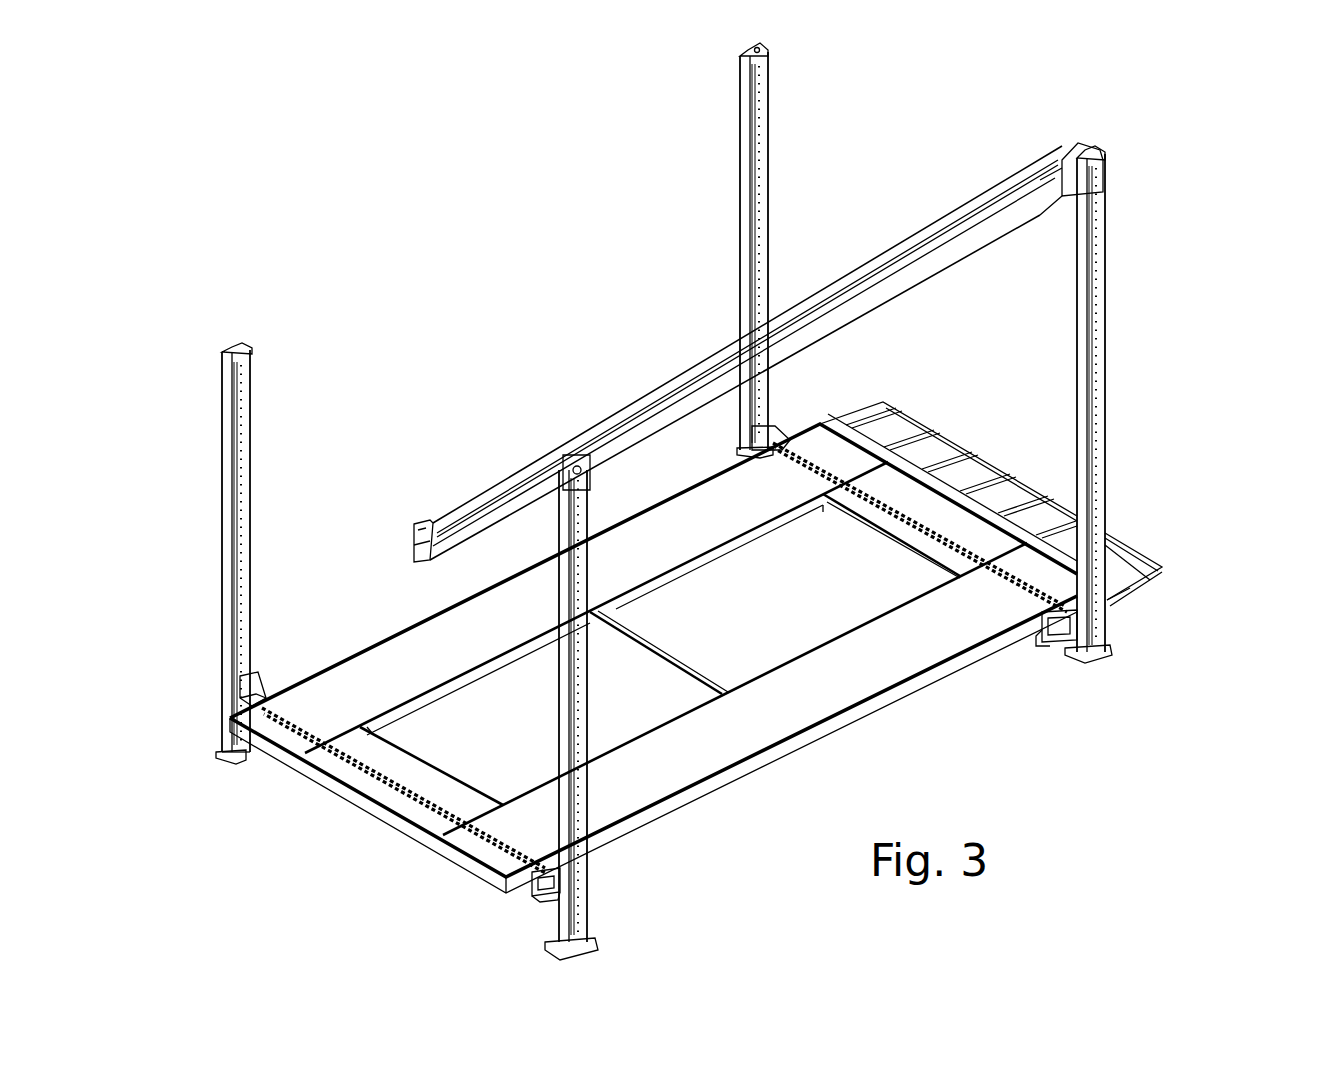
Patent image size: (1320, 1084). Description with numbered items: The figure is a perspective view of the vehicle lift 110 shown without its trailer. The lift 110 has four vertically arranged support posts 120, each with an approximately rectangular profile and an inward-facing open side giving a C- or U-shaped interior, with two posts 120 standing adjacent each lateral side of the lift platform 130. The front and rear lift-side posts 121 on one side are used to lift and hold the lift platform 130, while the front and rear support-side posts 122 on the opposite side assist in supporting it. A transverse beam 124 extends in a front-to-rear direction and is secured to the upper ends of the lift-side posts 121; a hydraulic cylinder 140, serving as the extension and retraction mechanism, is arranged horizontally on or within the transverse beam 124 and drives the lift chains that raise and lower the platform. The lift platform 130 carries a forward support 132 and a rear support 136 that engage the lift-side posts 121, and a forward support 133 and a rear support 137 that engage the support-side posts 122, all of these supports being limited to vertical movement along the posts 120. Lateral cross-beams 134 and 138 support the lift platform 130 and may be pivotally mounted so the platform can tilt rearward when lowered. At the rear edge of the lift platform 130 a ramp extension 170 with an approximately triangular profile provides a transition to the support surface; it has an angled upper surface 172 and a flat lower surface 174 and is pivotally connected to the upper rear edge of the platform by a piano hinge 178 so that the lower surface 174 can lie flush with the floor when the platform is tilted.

The vehicle lift 110 is at (1160, 262).
The support posts 120 is at (768, 213).
The lift-side posts 121 is at (1100, 373).
The support-side posts 122 is at (758, 131).
The transverse beam 124 is at (470, 530).
The lift platform 130 is at (860, 648).
The forward support 132 is at (553, 892).
The forward support 133 is at (240, 690).
The lateral cross-beam 134 is at (545, 882).
The rear support 136 is at (1060, 645).
The rear support 137 is at (763, 427).
The lateral cross-beam 138 is at (1050, 637).
The hydraulic cylinder 140 is at (652, 403).
The ramp extension 170 is at (991, 487).
The angled upper surface 172 is at (985, 492).
The flat lower surface 174 is at (1148, 592).
The piano hinge 178 is at (858, 434).